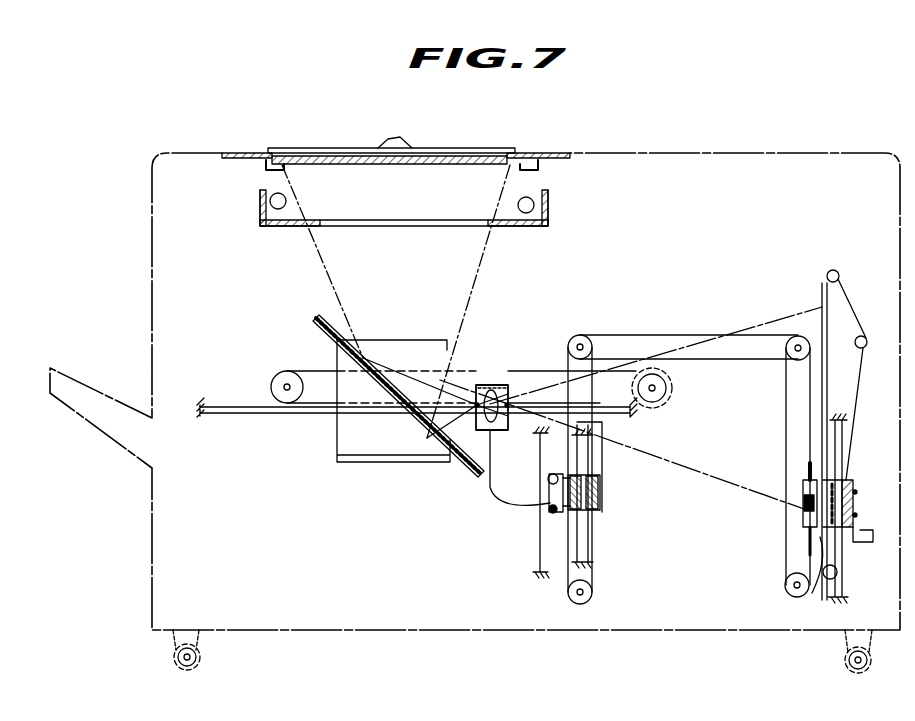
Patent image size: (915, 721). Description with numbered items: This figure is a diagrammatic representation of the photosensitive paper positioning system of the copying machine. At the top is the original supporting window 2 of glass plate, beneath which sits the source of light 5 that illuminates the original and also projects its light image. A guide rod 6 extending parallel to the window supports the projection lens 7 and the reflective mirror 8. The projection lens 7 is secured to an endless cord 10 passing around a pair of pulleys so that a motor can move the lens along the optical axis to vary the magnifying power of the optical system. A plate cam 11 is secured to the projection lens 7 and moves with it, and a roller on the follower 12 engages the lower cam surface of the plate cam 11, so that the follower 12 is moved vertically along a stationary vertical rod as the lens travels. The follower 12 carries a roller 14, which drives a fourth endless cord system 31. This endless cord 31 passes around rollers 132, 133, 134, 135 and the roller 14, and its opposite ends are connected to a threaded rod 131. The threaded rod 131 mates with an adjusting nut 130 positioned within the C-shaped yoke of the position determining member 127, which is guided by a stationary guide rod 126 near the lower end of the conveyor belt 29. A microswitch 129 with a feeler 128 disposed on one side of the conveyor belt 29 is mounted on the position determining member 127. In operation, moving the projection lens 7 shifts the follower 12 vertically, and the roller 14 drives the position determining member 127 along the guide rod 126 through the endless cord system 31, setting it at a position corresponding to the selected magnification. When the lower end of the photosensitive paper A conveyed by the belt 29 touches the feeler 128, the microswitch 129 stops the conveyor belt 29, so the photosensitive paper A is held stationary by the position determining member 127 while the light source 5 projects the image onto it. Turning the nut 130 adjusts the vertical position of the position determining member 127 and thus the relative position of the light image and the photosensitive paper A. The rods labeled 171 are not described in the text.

The original supporting window 2 is at (368, 162).
The source of light 5 is at (260, 204).
The guide rod 6 is at (280, 414).
The projection lens 7 is at (492, 388).
The reflective mirror 8 is at (314, 322).
The endless cord 10 is at (510, 386).
The plate cam 11 is at (490, 488).
The follower 12 is at (600, 493).
The roller 14 is at (548, 490).
The conveyor belt 29 is at (859, 405).
The fourth endless cord system 31 is at (672, 335).
The stationary guide rod 126 is at (842, 588).
The position determining member 127 is at (853, 488).
The feeler 128 is at (814, 583).
The microswitch 129 is at (868, 530).
The adjusting nut 130 is at (802, 504).
The threaded rod 131 is at (806, 538).
The roller 132 is at (796, 340).
The roller 133 is at (785, 586).
The roller 134 is at (580, 336).
The roller 135 is at (592, 594).
The guide rods 171 is at (592, 542).
The photosensitive paper A is at (822, 297).